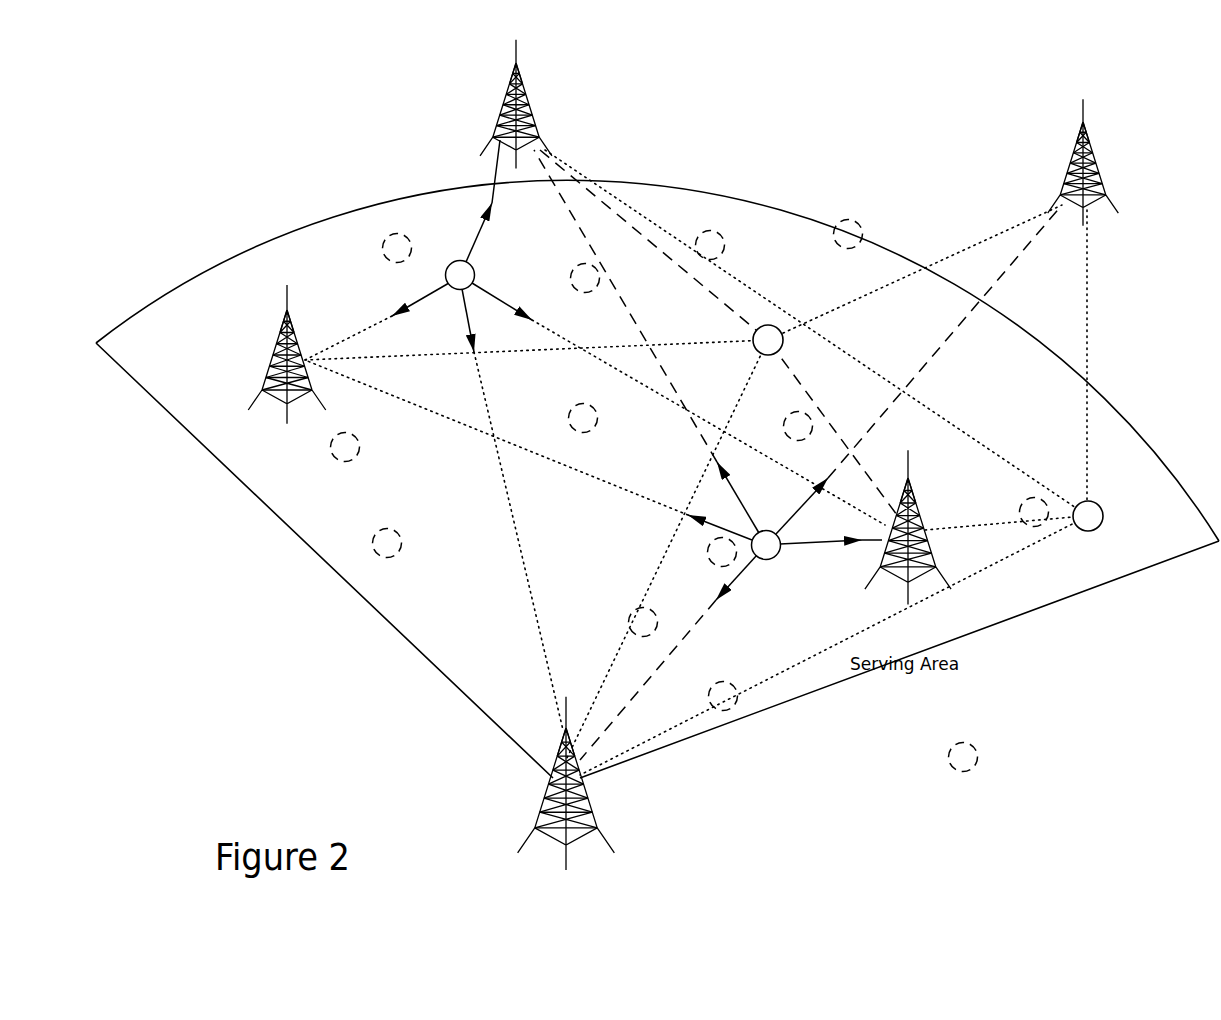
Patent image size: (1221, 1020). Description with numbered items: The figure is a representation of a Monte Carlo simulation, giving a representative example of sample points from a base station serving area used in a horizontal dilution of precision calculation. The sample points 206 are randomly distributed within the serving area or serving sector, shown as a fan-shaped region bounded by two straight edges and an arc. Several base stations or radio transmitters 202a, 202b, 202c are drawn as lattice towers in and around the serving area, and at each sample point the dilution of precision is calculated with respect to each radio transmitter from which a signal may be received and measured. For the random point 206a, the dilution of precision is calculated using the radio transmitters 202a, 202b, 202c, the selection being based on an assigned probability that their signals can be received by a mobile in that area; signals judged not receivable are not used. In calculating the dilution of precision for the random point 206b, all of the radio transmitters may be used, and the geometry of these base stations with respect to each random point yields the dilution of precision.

The radio transmitter 202a is at (567, 455).
The radio transmitter 202b is at (269, 354).
The radio transmitter 202c is at (1003, 351).
The sample points 206 is at (734, 496).
The random point 206a is at (474, 268).
The random point 206b is at (774, 558).